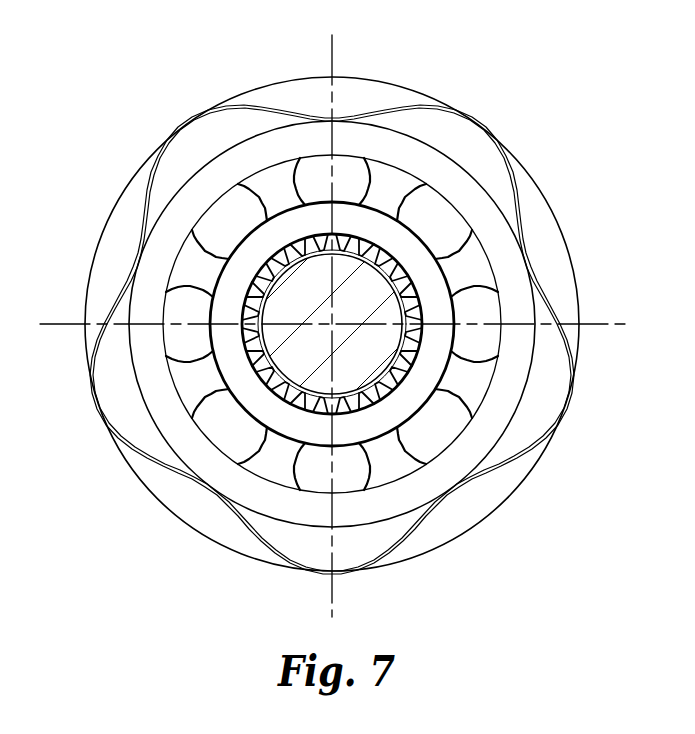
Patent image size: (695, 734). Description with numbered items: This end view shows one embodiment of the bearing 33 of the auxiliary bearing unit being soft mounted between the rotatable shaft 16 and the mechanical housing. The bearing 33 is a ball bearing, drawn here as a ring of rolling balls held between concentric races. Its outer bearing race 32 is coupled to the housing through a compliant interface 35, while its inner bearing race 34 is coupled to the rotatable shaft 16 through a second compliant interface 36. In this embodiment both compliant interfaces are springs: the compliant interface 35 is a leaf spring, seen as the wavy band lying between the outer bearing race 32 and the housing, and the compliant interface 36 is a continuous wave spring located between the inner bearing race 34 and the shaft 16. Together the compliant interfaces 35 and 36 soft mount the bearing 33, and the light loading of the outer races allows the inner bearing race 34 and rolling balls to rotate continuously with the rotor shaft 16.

The rotatable shaft 16 is at (357, 278).
The outer bearing race 32 is at (373, 147).
The bearing 33 is at (437, 425).
The inner bearing race 34 is at (227, 300).
The compliant interface 35 is at (460, 119).
The second compliant interface 36 is at (364, 396).